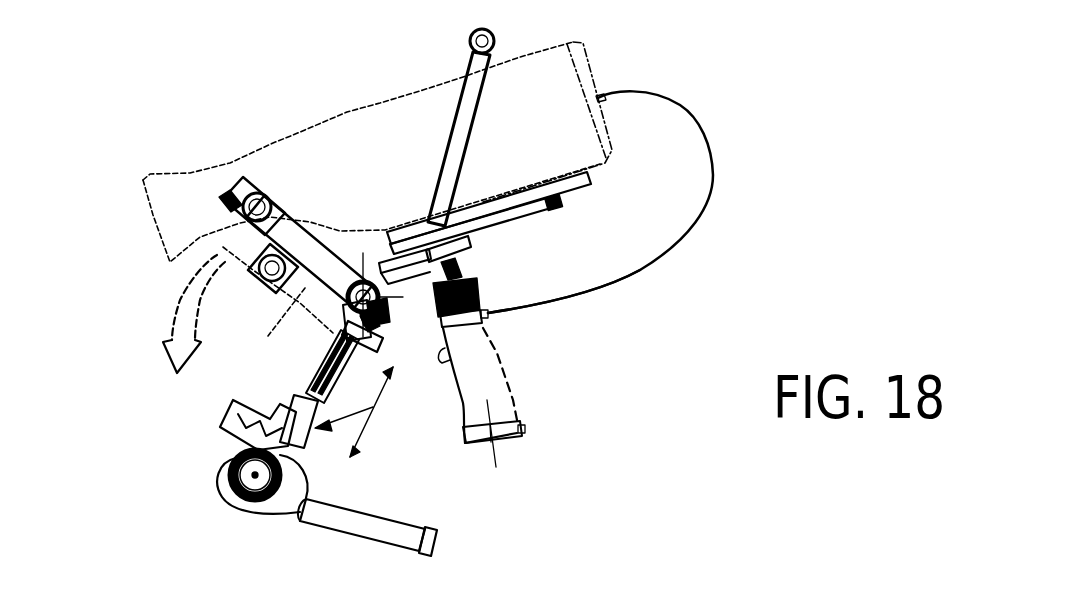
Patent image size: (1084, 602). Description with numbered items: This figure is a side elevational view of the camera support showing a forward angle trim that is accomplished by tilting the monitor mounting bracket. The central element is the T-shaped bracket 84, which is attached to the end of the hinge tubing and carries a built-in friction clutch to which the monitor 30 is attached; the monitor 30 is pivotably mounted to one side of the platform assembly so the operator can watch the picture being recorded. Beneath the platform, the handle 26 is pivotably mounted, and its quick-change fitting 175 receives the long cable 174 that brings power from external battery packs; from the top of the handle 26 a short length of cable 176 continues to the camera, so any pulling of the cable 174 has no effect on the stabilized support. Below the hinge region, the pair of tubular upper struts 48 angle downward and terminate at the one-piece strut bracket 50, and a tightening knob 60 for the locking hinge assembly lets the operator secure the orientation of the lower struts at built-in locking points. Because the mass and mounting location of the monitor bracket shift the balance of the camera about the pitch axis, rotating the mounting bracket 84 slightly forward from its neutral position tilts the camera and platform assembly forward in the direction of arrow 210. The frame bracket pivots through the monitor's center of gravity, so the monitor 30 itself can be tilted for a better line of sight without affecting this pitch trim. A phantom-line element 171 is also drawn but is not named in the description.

The handle 26 is at (488, 363).
The monitor 30 is at (240, 242).
The upper struts 48 is at (313, 368).
The strut bracket 50 is at (208, 432).
The tightening knob 60 is at (247, 485).
The T-shaped bracket 84 is at (293, 242).
The cylinder (phantom) 171 is at (583, 68).
The cable 174 is at (528, 427).
The quick-change fitting 175 is at (702, 225).
The cable 176 is at (659, 291).
The arrow 210 is at (183, 318).